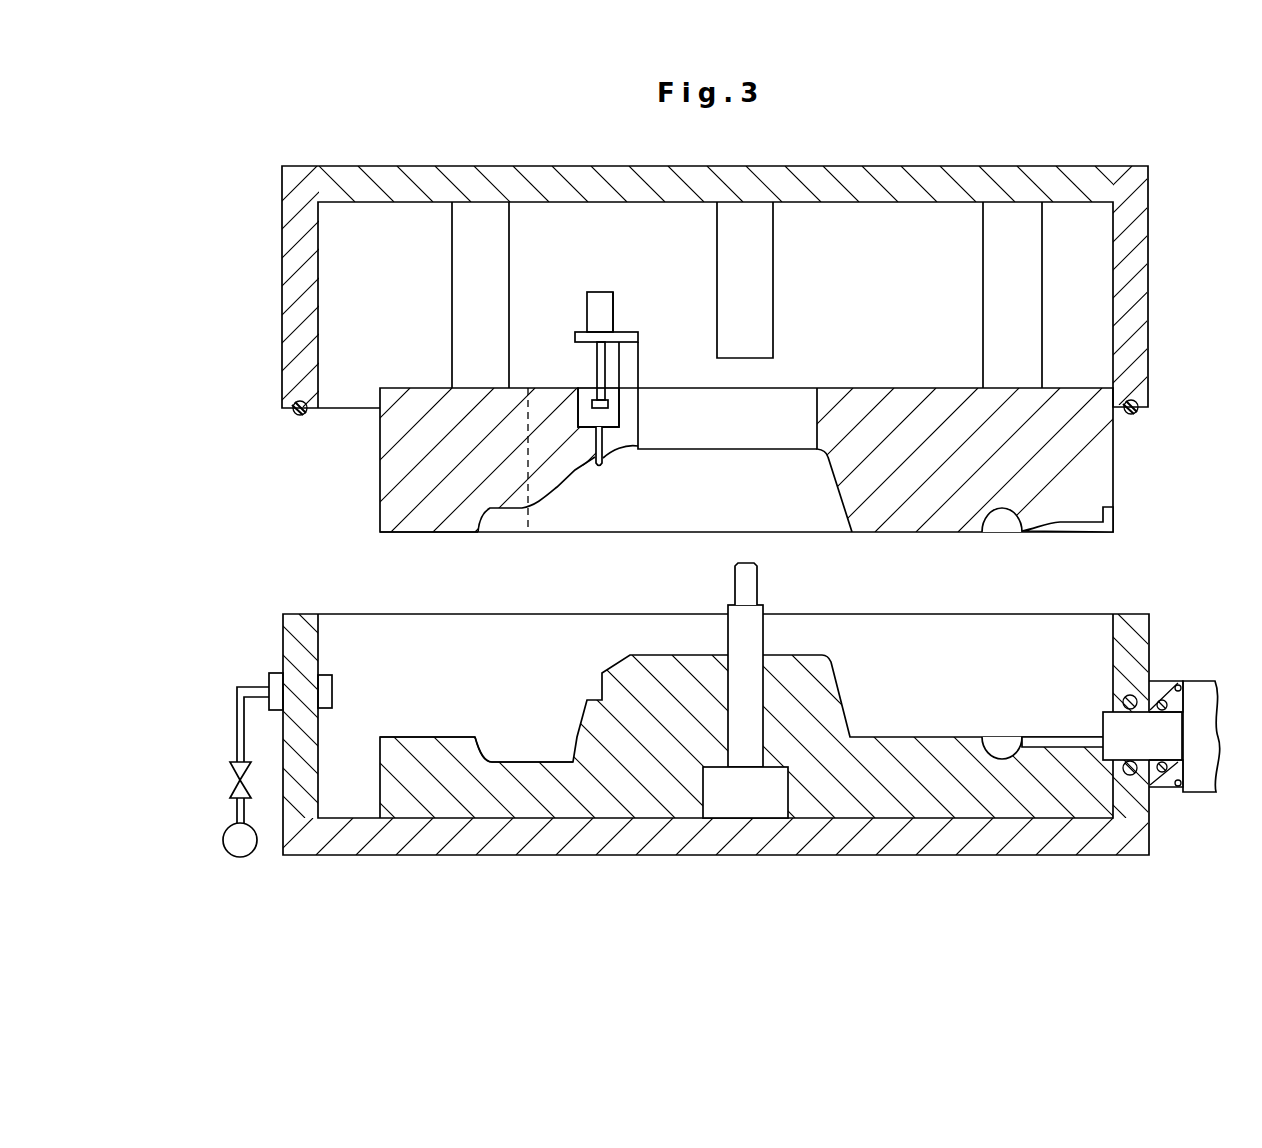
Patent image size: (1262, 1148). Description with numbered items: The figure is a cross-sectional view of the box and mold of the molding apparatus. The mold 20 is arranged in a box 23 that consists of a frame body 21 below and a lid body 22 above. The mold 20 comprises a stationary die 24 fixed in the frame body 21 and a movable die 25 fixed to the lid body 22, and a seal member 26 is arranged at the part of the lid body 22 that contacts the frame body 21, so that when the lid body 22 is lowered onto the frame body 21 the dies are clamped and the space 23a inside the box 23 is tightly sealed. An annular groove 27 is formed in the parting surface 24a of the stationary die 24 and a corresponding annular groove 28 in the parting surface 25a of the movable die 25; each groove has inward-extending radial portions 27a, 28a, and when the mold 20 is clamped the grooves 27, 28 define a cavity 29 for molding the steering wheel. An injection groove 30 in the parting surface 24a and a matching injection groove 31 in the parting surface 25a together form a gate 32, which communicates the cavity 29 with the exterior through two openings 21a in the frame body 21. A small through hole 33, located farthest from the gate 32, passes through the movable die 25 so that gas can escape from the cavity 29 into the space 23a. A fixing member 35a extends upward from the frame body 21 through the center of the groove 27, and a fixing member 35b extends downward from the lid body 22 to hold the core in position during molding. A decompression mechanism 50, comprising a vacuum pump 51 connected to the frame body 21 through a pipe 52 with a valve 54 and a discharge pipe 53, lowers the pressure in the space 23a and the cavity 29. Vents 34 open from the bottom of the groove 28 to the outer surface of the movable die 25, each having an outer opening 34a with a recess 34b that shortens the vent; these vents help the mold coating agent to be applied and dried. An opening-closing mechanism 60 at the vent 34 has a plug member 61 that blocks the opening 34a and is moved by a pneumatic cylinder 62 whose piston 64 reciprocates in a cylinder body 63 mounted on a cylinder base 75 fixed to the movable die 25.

The mold 20 is at (727, 603).
The frame body 21 is at (1150, 630).
The openings 21a is at (1152, 760).
The lid body 22 is at (1140, 404).
The box 23 is at (669, 510).
The space 23a is at (876, 266).
The stationary die 24 is at (727, 690).
The parting surface 24a is at (437, 737).
The movable die 25 is at (684, 486).
The parting surface 25a is at (414, 533).
The seal member 26 is at (300, 415).
The annular groove 27 is at (1002, 737).
The radial portions 27a is at (543, 762).
The annular groove 28 is at (1003, 533).
The radial portions 28a is at (588, 492).
The cavity 29 is at (975, 633).
The injection groove 30 is at (1078, 740).
The injection groove 31 is at (1080, 533).
The gate 32 is at (1079, 627).
The through hole 33 is at (526, 532).
The vents 34 is at (643, 452).
The outer opening 34a is at (617, 428).
The recess 34b is at (621, 398).
The fixing member 35a is at (765, 633).
The fixing member 35b is at (773, 325).
The decompression mechanism 50 is at (250, 707).
The vacuum pump 51 is at (223, 840).
The pipe 52 is at (237, 702).
The discharge pipe 53 is at (269, 676).
The valve 54 is at (231, 777).
The opening-closing mechanism 60 is at (597, 311).
The plug member 61 is at (597, 401).
The pneumatic cylinder 62 is at (587, 302).
The cylinder body 63 is at (613, 306).
The piston 64 is at (577, 340).
The cylinder base 75 is at (640, 357).